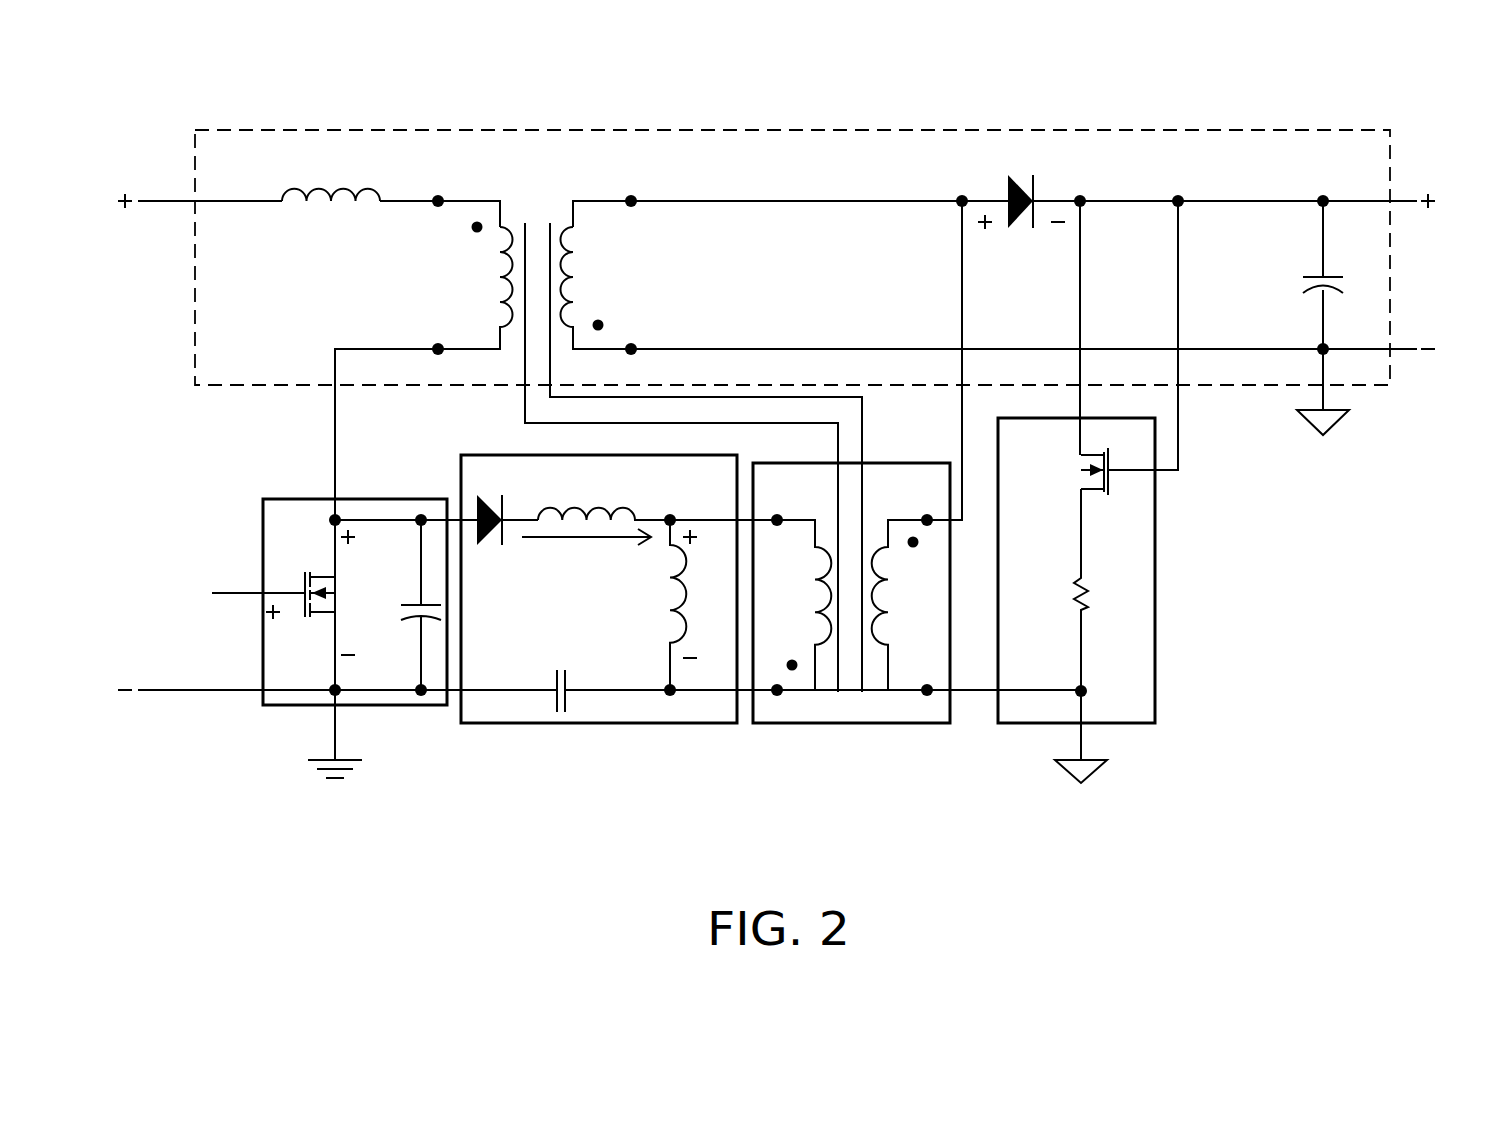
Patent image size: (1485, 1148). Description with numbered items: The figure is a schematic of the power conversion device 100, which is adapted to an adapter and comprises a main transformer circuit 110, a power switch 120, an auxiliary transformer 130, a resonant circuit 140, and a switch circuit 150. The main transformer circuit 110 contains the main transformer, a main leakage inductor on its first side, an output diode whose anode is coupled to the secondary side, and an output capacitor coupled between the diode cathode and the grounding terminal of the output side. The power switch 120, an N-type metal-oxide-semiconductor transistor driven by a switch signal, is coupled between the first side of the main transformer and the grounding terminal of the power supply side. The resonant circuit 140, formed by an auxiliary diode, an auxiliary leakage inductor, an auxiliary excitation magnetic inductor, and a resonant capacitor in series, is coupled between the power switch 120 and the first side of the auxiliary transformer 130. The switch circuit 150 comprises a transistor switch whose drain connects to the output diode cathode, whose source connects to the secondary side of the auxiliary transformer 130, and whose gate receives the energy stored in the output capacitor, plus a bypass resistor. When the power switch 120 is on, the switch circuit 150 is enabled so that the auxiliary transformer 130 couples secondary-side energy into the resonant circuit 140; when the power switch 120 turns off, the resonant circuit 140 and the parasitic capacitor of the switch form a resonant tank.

The power conversion device 100 is at (1383, 829).
The main transformer circuit 110 is at (1122, 130).
The power switch 120 is at (263, 541).
The auxiliary transformer 130 is at (852, 725).
The resonant circuit 140 is at (650, 725).
The switch circuit 150 is at (1155, 562).